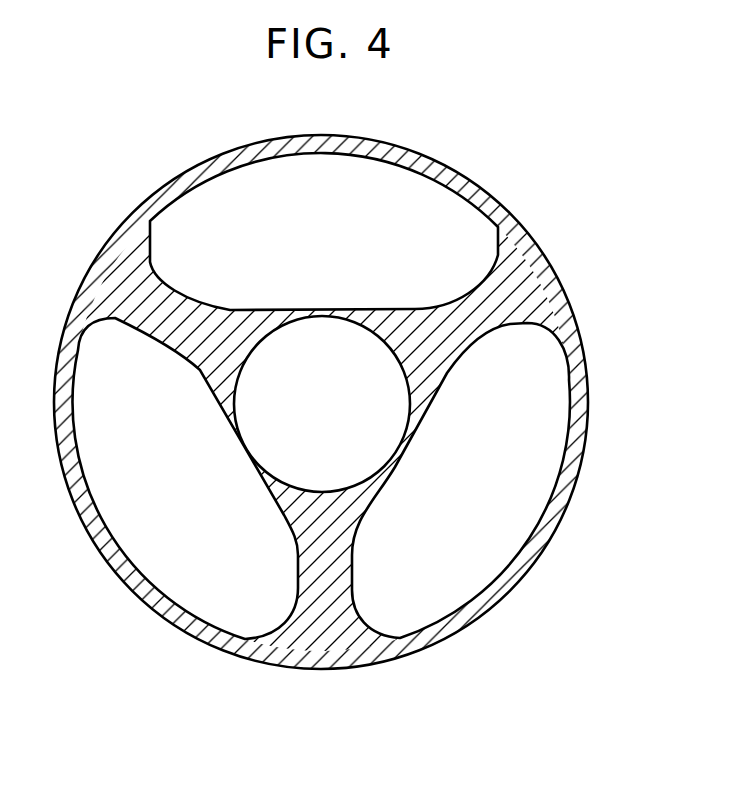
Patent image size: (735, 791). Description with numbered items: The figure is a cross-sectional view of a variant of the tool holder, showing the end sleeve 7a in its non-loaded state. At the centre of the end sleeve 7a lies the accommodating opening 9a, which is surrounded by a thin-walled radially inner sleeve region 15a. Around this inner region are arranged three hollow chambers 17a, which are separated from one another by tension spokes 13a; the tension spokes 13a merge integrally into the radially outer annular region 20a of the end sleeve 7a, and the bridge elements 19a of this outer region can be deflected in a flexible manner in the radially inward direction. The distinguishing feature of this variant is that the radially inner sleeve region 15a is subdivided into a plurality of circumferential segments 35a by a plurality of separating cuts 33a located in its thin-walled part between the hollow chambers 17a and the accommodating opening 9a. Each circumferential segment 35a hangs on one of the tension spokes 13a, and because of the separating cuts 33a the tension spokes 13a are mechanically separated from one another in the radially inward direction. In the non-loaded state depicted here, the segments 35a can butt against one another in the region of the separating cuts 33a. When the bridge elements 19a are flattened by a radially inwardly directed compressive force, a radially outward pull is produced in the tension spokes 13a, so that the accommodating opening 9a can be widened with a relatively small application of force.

The end sleeve 7a is at (343, 402).
The accommodating opening 9a is at (342, 412).
The tension spoke 13a is at (321, 432).
The radially inner sleeve region 15a is at (373, 483).
The hollow chamber 17a is at (383, 183).
The bridge element 19a is at (280, 150).
The radially outer annular region 20a is at (573, 507).
The separating cut 33a is at (325, 312).
The circumferential segment 35a is at (321, 402).